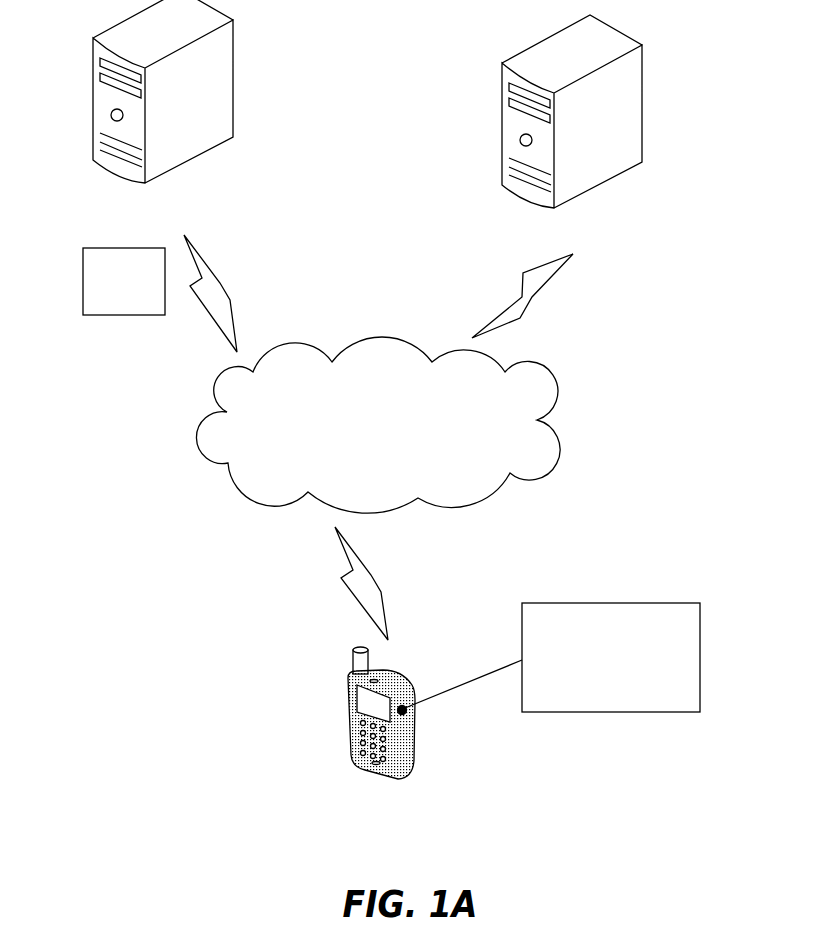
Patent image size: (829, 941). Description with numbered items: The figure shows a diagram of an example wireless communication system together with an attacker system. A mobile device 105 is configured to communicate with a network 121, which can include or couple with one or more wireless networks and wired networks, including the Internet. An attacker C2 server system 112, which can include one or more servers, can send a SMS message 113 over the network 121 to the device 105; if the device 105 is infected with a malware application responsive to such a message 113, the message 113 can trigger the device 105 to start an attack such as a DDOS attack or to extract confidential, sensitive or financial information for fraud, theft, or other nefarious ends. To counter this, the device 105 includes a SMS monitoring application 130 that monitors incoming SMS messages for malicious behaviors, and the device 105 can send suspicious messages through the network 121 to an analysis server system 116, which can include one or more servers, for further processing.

The attacker C2 server system 112 is at (233, 40).
The analysis server system 116 is at (642, 86).
The SMS message 113 is at (120, 248).
The network 121 is at (560, 445).
The SMS monitoring application 130 is at (687, 603).
The mobile device 105 is at (347, 703).